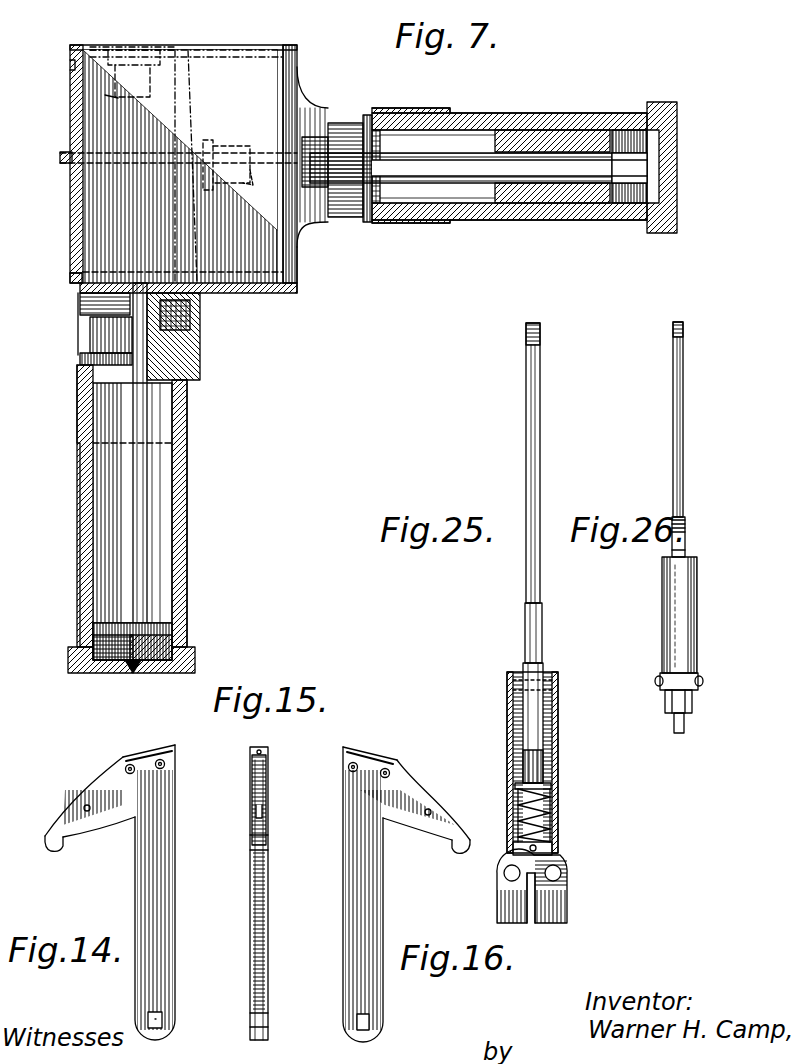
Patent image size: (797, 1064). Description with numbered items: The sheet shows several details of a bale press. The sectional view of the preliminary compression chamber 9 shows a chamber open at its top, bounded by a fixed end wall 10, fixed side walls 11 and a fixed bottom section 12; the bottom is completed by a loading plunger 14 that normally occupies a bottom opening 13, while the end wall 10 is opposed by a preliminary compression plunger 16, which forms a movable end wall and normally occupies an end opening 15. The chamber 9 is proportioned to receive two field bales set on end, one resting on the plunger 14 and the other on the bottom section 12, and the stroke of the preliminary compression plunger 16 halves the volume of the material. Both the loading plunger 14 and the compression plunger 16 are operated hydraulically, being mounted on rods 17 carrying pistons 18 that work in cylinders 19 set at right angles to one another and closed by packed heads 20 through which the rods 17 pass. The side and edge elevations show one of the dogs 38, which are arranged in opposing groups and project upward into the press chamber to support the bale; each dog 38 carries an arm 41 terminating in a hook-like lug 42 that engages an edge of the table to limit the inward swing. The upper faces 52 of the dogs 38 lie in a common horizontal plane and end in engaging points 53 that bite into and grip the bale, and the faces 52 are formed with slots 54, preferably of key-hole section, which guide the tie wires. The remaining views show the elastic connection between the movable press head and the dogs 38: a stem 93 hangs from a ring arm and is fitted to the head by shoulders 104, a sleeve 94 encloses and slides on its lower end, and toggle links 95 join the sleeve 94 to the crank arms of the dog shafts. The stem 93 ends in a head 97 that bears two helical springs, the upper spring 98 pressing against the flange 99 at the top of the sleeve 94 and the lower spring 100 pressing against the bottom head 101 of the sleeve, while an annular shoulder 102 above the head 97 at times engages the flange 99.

In FIG. 7, the preliminary compression chamber 9 is at (279, 87).
In FIG. 7, the fixed end wall 10 is at (80, 101).
In FIG. 7, the fixed side walls 11 is at (227, 52).
In FIG. 7, the fixed bottom section 12 is at (250, 293).
In FIG. 7, the bottom opening 13 is at (80, 273).
In FIG. 7, the loading plunger 14 is at (133, 46).
In FIG. 7, the end opening 15 is at (296, 283).
In FIG. 7, the preliminary compression plunger 16 is at (185, 125).
In FIG. 7, the rods 17 is at (115, 80).
In FIG. 7, the pistons 18 is at (612, 128).
In FIG. 7, the cylinders 19 is at (525, 112).
In FIG. 7, the packed heads 20 is at (341, 124).
In FIG. 14, the dogs 38 is at (173, 863).
In FIG. 15, the dogs 38 is at (274, 883).
In FIG. 16, the dogs 38 is at (390, 898).
In FIG. 14, the arms 41 is at (93, 800).
In FIG. 15, the arms 41 is at (268, 790).
In FIG. 16, the arms 41 is at (410, 792).
In FIG. 14, the hook-like lugs 42 is at (50, 847).
In FIG. 15, the hook-like lugs 42 is at (268, 840).
In FIG. 16, the hook-like lugs 42 is at (468, 833).
In FIG. 14, the upper faces 52 is at (148, 753).
In FIG. 16, the upper faces 52 is at (372, 753).
In FIG. 14, the engaging points 53 is at (175, 747).
In FIG. 16, the engaging points 53 is at (343, 747).
In FIG. 14, the slots 54 is at (127, 755).
In FIG. 15, the slots 54 is at (262, 750).
In FIG. 16, the slots 54 is at (397, 760).
In FIG. 25, the stem 93 is at (537, 441).
In FIG. 26, the stem 93 is at (684, 473).
In FIG. 25, the sleeve 94 is at (564, 698).
In FIG. 26, the sleeve 94 is at (697, 740).
In FIG. 25, the toggle links 95 is at (520, 908).
In FIG. 26, the toggle links 95 is at (676, 907).
In FIG. 25, the head 97 is at (548, 786).
In FIG. 25, the upper spring 98 is at (510, 697).
In FIG. 25, the flange 99 is at (547, 672).
In FIG. 25, the lower spring 100 is at (550, 812).
In FIG. 25, the bottom head 101 is at (555, 847).
In FIG. 26, the bottom head 101 is at (698, 843).
In FIG. 25, the annular shoulder 102 is at (563, 759).
In FIG. 25, the shoulders 104 is at (525, 665).
In FIG. 26, the shoulders 104 is at (688, 662).